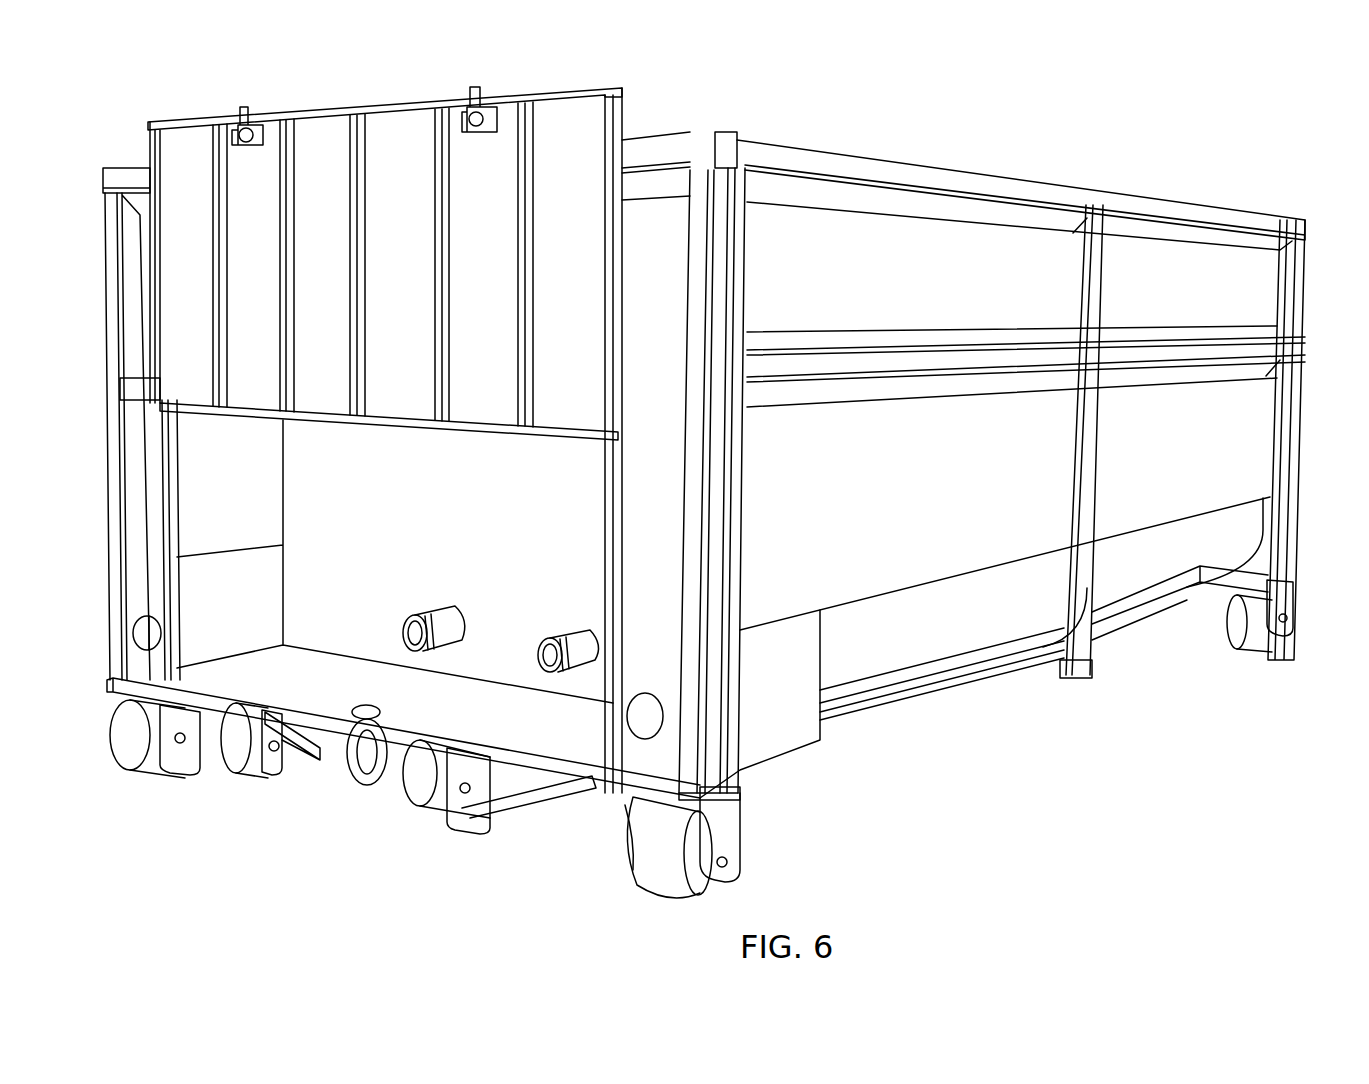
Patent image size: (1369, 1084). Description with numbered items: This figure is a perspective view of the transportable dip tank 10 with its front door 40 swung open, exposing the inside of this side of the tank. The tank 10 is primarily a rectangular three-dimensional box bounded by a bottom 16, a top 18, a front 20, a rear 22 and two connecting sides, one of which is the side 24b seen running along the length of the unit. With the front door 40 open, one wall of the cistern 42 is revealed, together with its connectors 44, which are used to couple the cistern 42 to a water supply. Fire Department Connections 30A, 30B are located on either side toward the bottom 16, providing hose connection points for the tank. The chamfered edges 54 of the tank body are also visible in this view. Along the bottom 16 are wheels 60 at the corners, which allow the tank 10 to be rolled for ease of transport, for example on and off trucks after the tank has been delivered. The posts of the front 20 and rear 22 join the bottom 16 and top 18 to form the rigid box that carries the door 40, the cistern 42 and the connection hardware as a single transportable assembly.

The transportable dip tank 10 is at (1214, 120).
The bottom 16 is at (862, 704).
The top 18 is at (878, 165).
The front 20 is at (128, 303).
The rear 22 is at (1302, 397).
The connecting side 24b is at (1266, 275).
The Fire Department Connection 30A is at (132, 632).
The Fire Department Connection 30B is at (642, 730).
The front door 40 is at (322, 135).
The cistern 42 is at (400, 505).
The connectors 44 is at (548, 640).
The chamfered edges 54 is at (1148, 225).
The wheels 60 is at (655, 880).